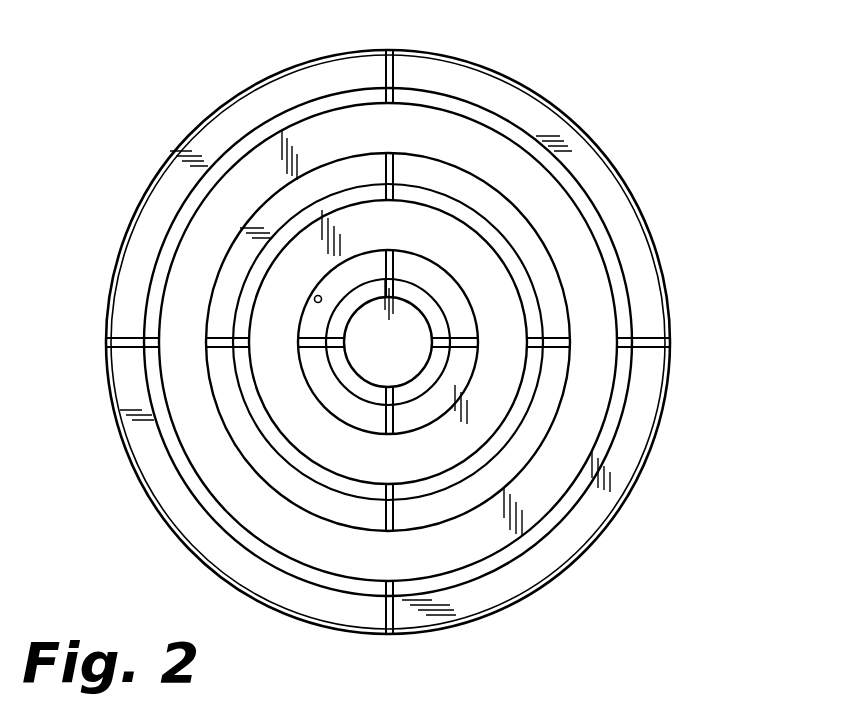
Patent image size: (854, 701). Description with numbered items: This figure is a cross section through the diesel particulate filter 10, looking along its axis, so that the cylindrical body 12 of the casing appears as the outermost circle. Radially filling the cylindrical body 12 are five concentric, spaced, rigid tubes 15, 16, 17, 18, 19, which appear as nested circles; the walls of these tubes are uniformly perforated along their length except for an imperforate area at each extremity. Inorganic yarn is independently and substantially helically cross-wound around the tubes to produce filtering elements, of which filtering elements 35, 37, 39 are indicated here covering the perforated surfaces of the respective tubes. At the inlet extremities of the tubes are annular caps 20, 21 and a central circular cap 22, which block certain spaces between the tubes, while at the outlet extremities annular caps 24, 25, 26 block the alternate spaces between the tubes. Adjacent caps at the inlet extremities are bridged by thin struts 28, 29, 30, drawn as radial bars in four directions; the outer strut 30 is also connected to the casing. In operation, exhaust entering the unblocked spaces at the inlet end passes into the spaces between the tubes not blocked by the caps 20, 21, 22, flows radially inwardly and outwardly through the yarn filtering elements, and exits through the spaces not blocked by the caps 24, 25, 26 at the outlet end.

The diesel particulate filter 10 is at (684, 108).
The cylindrical body 12 is at (650, 228).
The tube 15 is at (329, 418).
The tube 16 is at (315, 297).
The tube 17 is at (513, 280).
The tube 18 is at (479, 509).
The tube 19 is at (626, 405).
The annular cap 20 is at (300, 250).
The annular cap 21 is at (585, 442).
The central circular cap 22 is at (402, 377).
The annular cap 24 is at (340, 376).
The annular cap 25 is at (496, 486).
The annular cap 26 is at (647, 282).
The strut 28 is at (410, 257).
The strut 29 is at (394, 170).
The strut 30 is at (395, 64).
The filtering element 35 is at (356, 389).
The filtering element 37 is at (496, 243).
The filtering element 39 is at (625, 327).